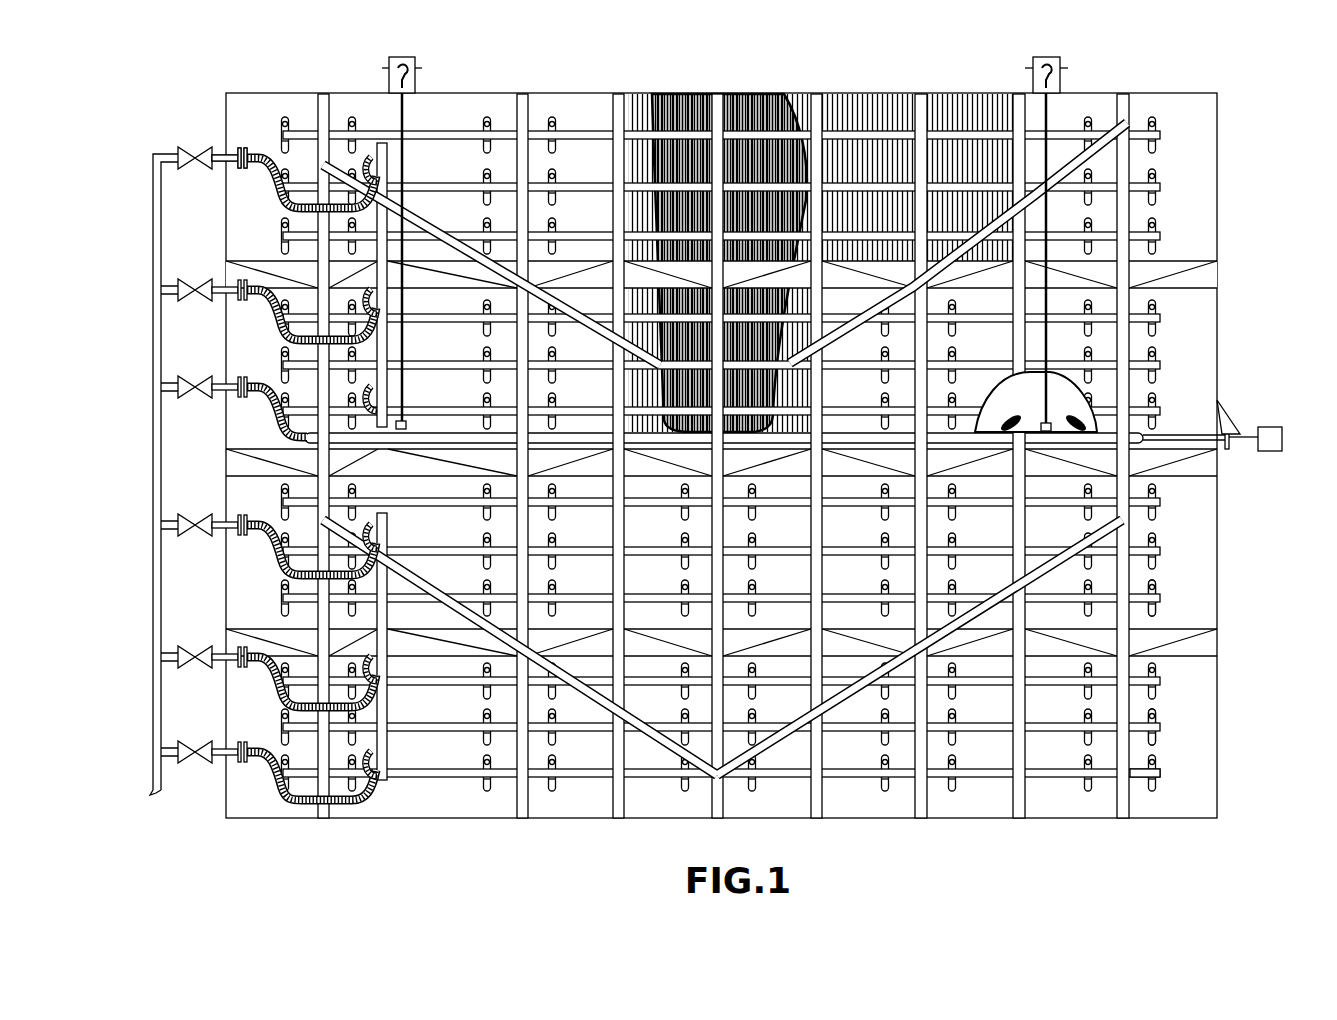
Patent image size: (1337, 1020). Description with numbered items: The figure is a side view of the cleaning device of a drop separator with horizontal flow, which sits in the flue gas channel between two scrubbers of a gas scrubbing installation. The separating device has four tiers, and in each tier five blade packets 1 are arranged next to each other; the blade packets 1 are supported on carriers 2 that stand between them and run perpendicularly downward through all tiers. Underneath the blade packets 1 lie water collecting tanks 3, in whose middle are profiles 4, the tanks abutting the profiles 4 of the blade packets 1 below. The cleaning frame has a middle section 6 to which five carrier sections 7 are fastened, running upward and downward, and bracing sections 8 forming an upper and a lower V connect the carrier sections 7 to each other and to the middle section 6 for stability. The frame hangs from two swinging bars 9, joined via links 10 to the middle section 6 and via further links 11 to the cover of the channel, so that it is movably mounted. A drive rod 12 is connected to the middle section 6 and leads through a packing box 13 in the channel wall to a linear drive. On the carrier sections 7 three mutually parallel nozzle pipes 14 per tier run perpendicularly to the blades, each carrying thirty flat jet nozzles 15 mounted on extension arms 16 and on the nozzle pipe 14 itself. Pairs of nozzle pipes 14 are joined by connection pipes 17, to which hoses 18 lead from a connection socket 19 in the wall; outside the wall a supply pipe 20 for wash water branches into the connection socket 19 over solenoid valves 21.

The blade packets 1 is at (770, 120).
The carriers 2 is at (622, 118).
The water collecting tanks 3 is at (677, 125).
The profiles 4 is at (720, 100).
The middle section 6 is at (1108, 437).
The carrier sections 7 is at (1120, 218).
The bracing sections 8 is at (1085, 185).
The swinging bars 9 is at (1050, 118).
The links 10 is at (1060, 425).
The further links 11 is at (1052, 82).
The drive rod 12 is at (1180, 445).
The packing box 13 is at (1228, 450).
The nozzle pipes 14 is at (1135, 600).
The flat jet nozzles 15 is at (1153, 712).
The extension arms 16 is at (1155, 740).
The connection pipes 17 is at (405, 150).
The hoses 18 is at (263, 172).
The connection socket 19 is at (240, 153).
The supply pipe 20 is at (153, 352).
The solenoid valves 21 is at (185, 150).